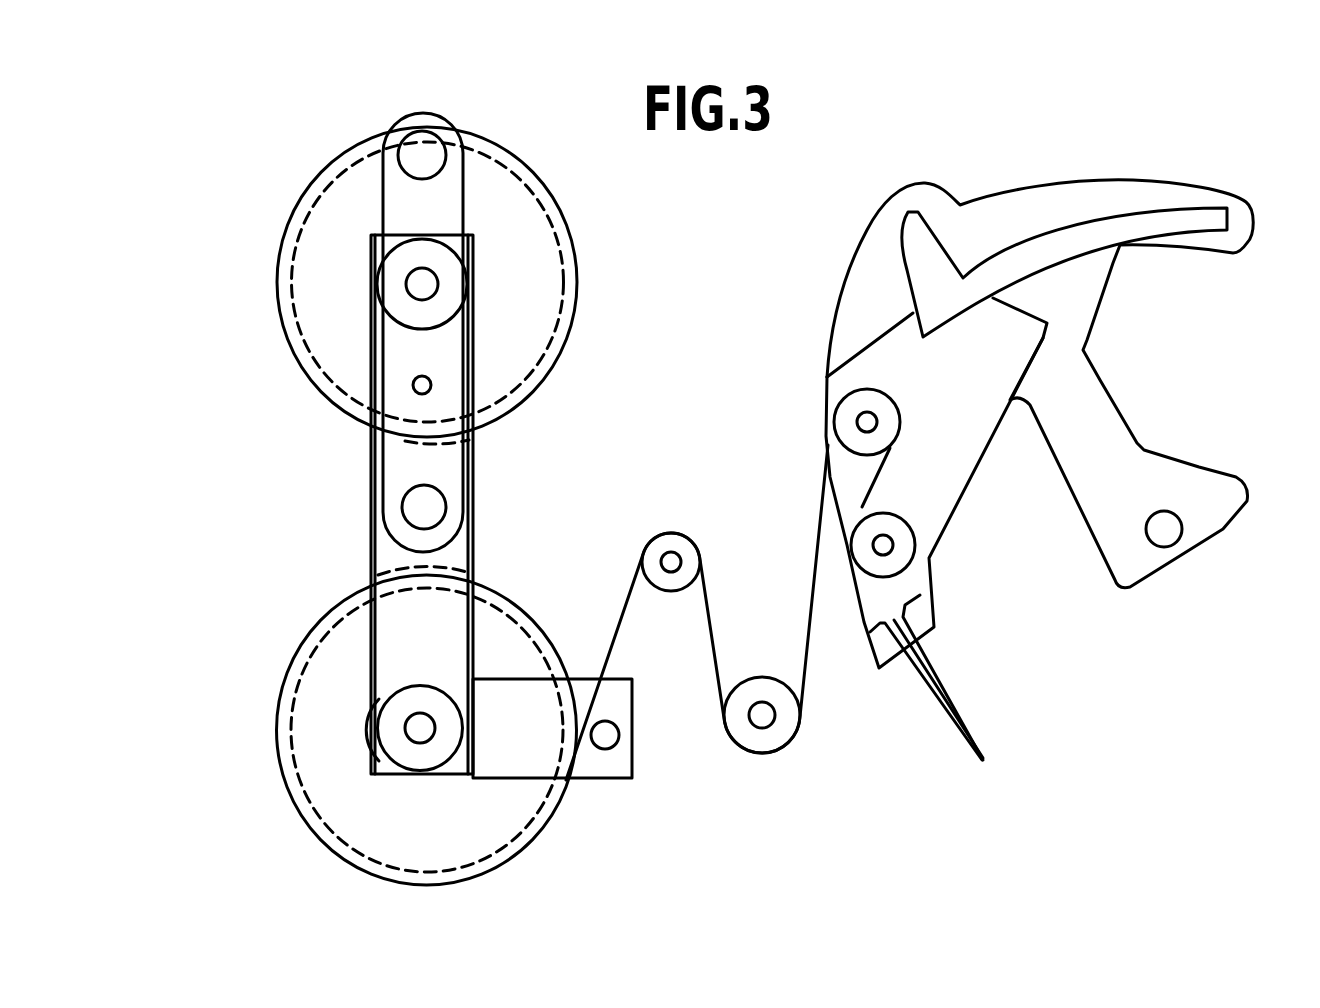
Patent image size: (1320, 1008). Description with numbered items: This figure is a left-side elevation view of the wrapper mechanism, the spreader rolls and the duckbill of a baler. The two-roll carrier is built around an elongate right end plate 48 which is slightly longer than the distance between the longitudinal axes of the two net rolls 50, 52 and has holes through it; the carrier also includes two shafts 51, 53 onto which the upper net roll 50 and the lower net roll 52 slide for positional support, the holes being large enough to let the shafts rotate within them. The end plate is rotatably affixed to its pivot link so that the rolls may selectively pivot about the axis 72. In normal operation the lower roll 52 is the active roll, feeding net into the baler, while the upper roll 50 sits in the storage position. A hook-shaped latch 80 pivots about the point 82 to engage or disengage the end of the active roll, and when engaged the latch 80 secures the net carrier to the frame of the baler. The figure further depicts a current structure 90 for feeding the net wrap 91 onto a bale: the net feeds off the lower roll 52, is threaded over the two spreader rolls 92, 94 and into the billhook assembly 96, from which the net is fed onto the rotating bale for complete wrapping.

The right end plate 48 is at (454, 554).
The net roll 50 is at (537, 250).
The shaft 51 is at (402, 252).
The net roll 52 is at (480, 830).
The shaft 53 is at (400, 717).
The axis 72 is at (413, 505).
The hook-shaped latch 80 is at (523, 694).
The pivot point 82 is at (608, 742).
The net feeding structure 90 is at (805, 342).
The net wrap 91 is at (807, 663).
The spreader roll 92 is at (673, 540).
The spreader roll 94 is at (763, 690).
The billhook assembly 96 is at (1047, 195).